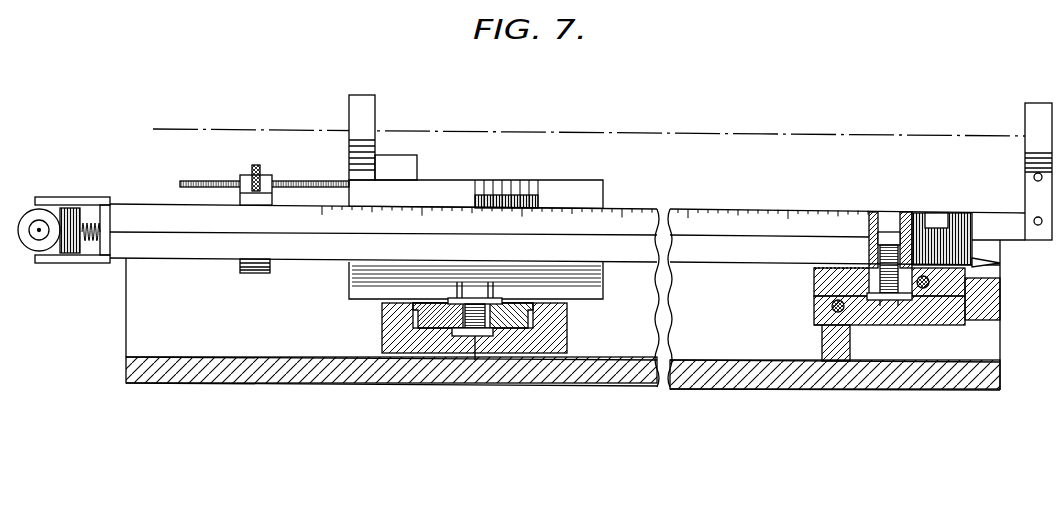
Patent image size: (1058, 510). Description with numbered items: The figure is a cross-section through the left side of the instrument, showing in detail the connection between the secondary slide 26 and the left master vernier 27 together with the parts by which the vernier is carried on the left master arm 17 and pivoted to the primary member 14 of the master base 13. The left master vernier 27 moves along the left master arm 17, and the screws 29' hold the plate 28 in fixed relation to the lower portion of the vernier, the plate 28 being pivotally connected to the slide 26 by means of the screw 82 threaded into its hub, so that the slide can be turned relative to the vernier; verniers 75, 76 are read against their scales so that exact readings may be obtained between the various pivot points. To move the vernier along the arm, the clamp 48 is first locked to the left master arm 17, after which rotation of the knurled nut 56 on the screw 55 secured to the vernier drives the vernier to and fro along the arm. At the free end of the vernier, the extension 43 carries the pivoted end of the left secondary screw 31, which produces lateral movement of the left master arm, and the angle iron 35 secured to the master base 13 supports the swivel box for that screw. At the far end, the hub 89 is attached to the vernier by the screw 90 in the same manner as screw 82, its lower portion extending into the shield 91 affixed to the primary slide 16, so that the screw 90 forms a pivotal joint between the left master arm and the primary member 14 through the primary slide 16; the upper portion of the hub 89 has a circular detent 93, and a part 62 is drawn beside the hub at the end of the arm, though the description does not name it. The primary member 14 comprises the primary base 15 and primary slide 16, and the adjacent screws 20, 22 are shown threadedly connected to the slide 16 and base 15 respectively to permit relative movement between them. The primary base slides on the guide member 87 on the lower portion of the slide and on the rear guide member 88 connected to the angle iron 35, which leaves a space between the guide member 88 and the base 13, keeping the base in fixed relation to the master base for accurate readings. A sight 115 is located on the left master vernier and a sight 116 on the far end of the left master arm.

The master base 13 is at (632, 372).
The primary member 14 is at (806, 331).
The primary base 15 is at (815, 299).
The primary slide 16 is at (815, 279).
The left master arm 17 is at (702, 253).
The screw 20 is at (923, 289).
The screw 22 is at (832, 306).
The secondary slide 26 is at (382, 318).
The left master vernier 27 is at (584, 186).
The plate 28 is at (500, 302).
The screws 29' is at (471, 283).
The left secondary screw 31 is at (93, 238).
The angle iron 35 is at (148, 334).
The extension 43 is at (73, 200).
The clamp 48 is at (243, 273).
The screw 55 is at (215, 180).
The knurled nut 56 is at (256, 165).
The clamp 62 is at (984, 258).
The vernier 75 is at (522, 308).
The vernier 76 is at (427, 305).
The screw 82 is at (477, 338).
The guide member 87 is at (836, 346).
The rear guide member 88 is at (986, 297).
The hub 89 is at (871, 226).
The screw 90 is at (881, 301).
The shield 91 is at (871, 273).
The circular detent 93 is at (889, 230).
The sight 115 is at (367, 102).
The sight 116 is at (1036, 103).